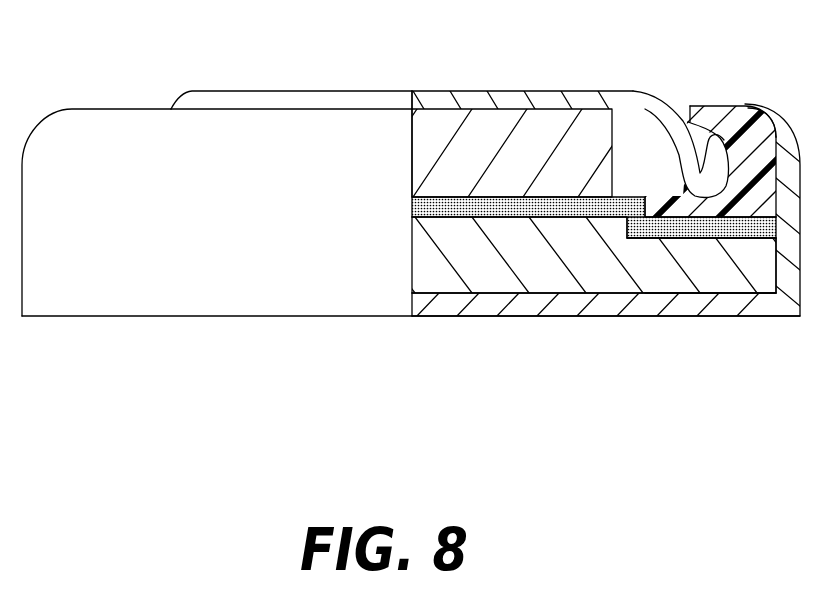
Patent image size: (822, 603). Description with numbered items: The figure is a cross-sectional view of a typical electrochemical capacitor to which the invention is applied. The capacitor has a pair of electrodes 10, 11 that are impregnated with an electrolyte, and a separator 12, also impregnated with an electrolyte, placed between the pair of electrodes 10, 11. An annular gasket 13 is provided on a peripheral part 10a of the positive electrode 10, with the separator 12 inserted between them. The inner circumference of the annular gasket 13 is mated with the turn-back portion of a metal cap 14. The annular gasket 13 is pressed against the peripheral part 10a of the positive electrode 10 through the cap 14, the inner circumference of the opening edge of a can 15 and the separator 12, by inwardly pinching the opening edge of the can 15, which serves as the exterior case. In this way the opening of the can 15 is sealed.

The positive electrode 10 is at (500, 262).
The peripheral part of the positive electrode 10a is at (690, 258).
The electrode 11 is at (490, 122).
The separator 12 is at (563, 212).
The annular gasket 13 is at (742, 172).
The metal cap 14 is at (440, 99).
The can 15 is at (578, 303).